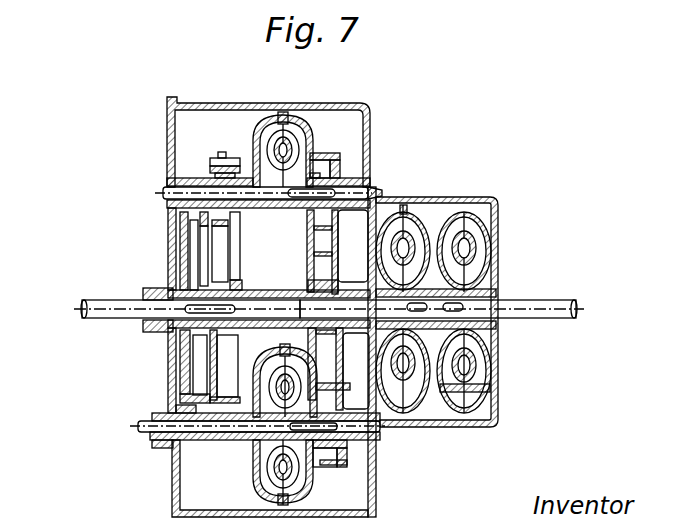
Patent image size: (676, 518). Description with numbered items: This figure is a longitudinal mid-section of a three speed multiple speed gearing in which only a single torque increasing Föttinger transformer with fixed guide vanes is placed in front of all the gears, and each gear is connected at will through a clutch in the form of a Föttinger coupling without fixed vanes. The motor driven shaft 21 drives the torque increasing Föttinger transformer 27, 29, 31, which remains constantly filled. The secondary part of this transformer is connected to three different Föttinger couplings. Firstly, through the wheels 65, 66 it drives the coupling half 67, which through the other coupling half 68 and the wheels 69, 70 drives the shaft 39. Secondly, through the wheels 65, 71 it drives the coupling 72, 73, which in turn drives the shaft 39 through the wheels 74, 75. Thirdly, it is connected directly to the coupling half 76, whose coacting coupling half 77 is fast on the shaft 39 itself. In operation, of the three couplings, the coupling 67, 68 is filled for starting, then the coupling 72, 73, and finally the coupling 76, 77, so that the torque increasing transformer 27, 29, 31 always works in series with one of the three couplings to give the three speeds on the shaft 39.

The motor driven shaft 21 is at (562, 307).
The torque increasing Föttinger transformer 27 is at (450, 278).
The torque increasing Föttinger transformer 29 is at (475, 245).
The torque increasing Föttinger transformer 31 is at (483, 255).
The shaft 39 is at (103, 305).
The wheel 65 is at (335, 357).
The wheel 66 is at (330, 467).
The coupling half 67 is at (295, 483).
The coupling half 68 is at (273, 466).
The wheel 69 is at (174, 409).
The wheel 70 is at (175, 370).
The wheel 71 is at (337, 171).
The coupling half 72 is at (293, 146).
The coupling half 73 is at (268, 166).
The wheel 74 is at (223, 161).
The wheel 75 is at (232, 250).
The coupling half 76 is at (390, 350).
The coupling half 77 is at (423, 372).